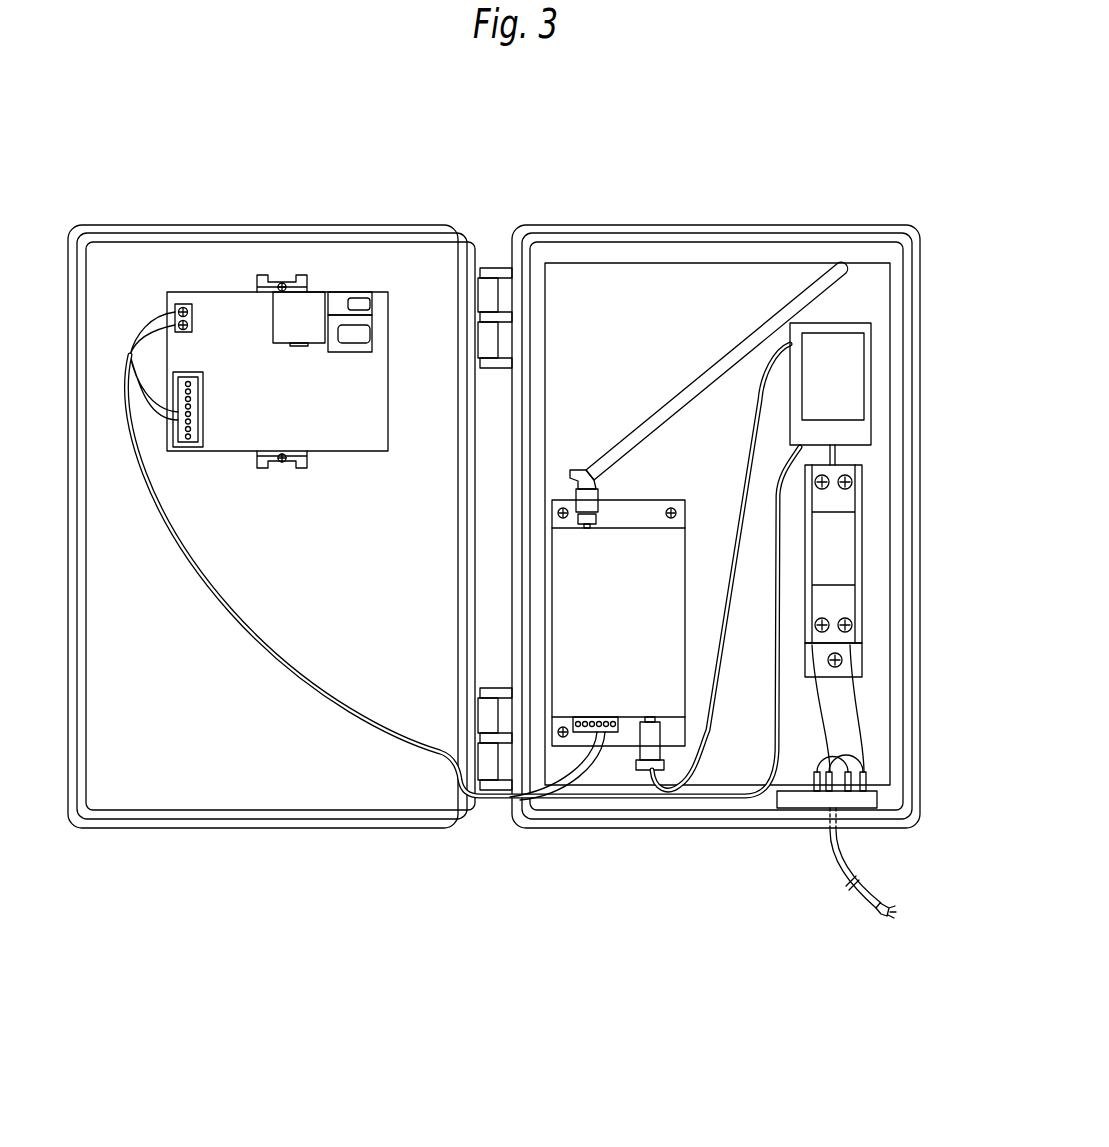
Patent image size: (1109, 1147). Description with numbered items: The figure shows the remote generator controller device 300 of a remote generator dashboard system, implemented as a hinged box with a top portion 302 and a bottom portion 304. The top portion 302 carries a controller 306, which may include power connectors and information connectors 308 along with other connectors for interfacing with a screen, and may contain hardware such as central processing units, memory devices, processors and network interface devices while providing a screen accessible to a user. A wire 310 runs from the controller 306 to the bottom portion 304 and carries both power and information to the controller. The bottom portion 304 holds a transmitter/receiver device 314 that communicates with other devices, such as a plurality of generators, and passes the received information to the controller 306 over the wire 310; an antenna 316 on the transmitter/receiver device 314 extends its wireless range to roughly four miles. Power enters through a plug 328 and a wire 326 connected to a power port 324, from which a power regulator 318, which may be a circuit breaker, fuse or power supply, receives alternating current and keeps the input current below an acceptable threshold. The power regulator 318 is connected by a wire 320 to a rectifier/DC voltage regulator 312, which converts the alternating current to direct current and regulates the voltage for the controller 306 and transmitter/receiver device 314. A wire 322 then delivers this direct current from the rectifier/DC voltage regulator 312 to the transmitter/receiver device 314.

The remote generator controller device 300 is at (793, 124).
The top portion 302 is at (214, 224).
The bottom portion 304 is at (672, 225).
The controller 306 is at (313, 404).
The information connectors 308 is at (183, 450).
The wire 310 is at (245, 628).
The rectifier/DC voltage regulator 312 is at (850, 360).
The transmitter/receiver device 314 is at (639, 620).
The antenna 316 is at (750, 340).
The power regulator 318 is at (850, 538).
The wire 320 is at (836, 461).
The wire 322 is at (745, 490).
The power port 324 is at (795, 806).
The wire 326 is at (833, 848).
The plug 328 is at (882, 918).